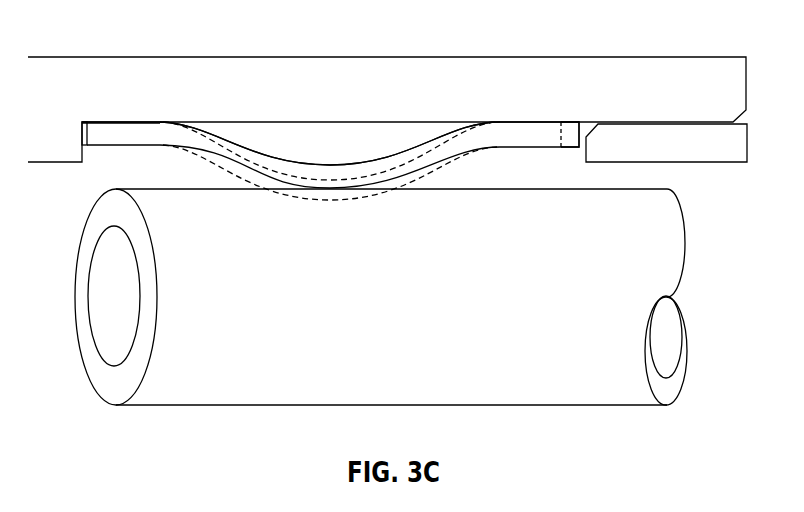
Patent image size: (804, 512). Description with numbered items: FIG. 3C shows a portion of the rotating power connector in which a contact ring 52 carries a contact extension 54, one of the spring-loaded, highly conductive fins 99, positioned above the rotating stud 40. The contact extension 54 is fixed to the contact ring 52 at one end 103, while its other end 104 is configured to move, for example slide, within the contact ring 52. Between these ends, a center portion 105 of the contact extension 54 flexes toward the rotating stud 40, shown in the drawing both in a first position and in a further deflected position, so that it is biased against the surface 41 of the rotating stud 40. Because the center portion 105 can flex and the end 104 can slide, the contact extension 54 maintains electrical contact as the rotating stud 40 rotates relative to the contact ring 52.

The contact ring 52 is at (97, 57).
The one end 103 is at (97, 123).
The another end 104 is at (579, 123).
The contact extension 54 is at (343, 163).
The fin 99 is at (409, 159).
The center portion 105 is at (338, 203).
The rotating stud 40 is at (381, 304).
The surface 41 is at (522, 189).